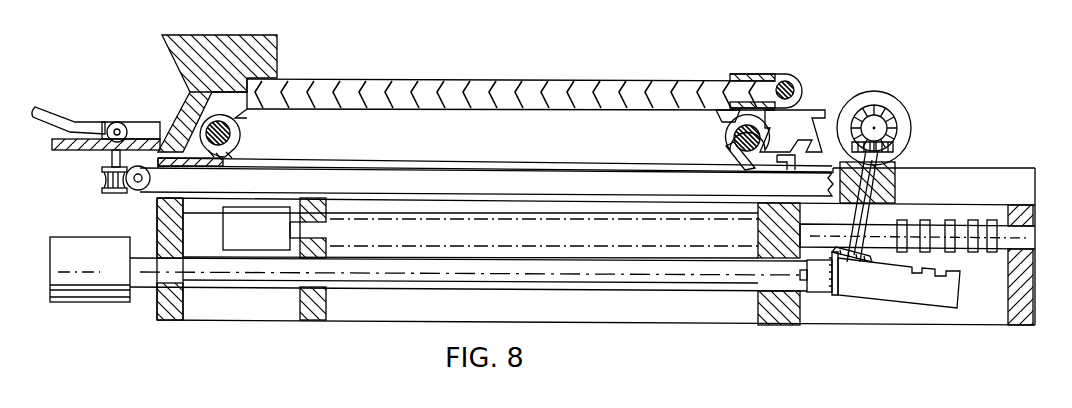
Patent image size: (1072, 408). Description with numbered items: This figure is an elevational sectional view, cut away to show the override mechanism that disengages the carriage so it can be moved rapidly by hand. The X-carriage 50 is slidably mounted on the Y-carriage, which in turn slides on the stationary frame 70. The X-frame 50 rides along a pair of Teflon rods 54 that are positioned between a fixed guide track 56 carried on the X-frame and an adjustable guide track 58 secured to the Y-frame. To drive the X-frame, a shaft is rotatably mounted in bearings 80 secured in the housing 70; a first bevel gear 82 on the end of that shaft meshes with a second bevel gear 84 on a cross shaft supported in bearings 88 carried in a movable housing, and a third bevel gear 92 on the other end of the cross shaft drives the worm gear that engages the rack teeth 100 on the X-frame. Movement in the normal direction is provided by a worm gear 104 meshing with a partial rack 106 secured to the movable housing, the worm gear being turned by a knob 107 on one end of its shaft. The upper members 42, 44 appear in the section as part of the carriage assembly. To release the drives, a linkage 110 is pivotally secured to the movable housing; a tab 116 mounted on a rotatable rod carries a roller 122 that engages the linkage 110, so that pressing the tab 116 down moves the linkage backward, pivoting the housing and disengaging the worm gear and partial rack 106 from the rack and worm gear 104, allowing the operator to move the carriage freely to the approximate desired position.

The clevis end of belt 42 is at (605, 96).
The toothed belt 44 is at (455, 88).
The X-carriage 50 is at (172, 118).
The Teflon rods 54 is at (738, 152).
The fixed guide track 56 is at (193, 128).
The adjustable guide track 58 is at (727, 132).
The stationary frame 70 is at (308, 320).
The bearings 80 is at (184, 258).
The first bevel gear 82 is at (833, 296).
The second bevel gear 84 is at (866, 262).
The bearings 88 is at (878, 100).
The third bevel gear 92 is at (898, 145).
The rack teeth 100 is at (822, 122).
The worm gear 104 is at (975, 222).
The partial rack 106 is at (945, 306).
The knob 107 is at (103, 303).
The linkage 110 is at (245, 183).
The tab 116 is at (55, 105).
The roller 122 is at (102, 184).